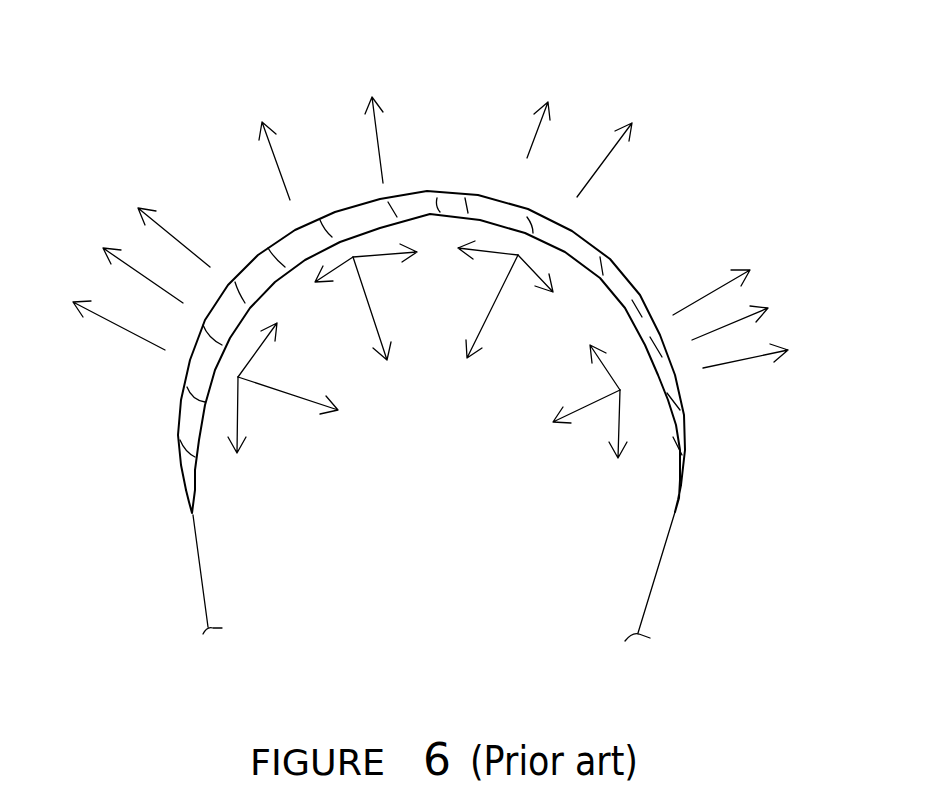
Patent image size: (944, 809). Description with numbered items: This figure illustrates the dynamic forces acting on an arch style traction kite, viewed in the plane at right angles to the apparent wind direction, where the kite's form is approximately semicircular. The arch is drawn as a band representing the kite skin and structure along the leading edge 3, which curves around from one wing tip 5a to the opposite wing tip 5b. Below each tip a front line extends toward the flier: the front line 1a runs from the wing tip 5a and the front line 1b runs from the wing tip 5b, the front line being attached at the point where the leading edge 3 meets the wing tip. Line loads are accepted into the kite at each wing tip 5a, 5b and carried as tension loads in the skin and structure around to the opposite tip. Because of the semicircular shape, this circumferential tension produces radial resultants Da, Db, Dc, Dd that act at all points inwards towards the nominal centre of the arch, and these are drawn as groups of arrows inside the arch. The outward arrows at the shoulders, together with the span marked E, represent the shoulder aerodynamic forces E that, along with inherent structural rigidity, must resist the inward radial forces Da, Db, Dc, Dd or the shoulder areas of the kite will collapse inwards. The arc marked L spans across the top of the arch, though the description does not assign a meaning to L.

The leading edge 3 is at (440, 197).
The wing tip 5a is at (193, 518).
The wing tip 5b is at (676, 511).
The front line 1a is at (202, 590).
The front line 1b is at (655, 572).
The length of band L is at (692, 132).
The shoulder aerodynamic forces E is at (140, 177).
The radial resultant Da is at (306, 388).
The radial resultant Db is at (368, 320).
The radial resultant Dc is at (502, 318).
The radial resultant Dd is at (562, 401).